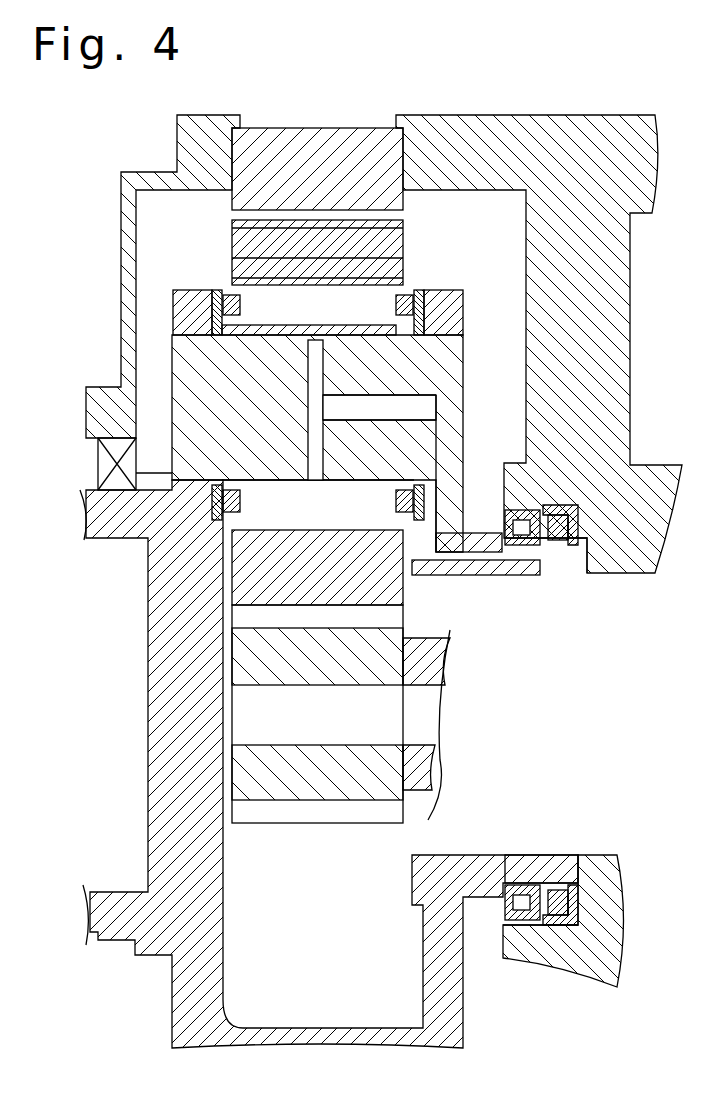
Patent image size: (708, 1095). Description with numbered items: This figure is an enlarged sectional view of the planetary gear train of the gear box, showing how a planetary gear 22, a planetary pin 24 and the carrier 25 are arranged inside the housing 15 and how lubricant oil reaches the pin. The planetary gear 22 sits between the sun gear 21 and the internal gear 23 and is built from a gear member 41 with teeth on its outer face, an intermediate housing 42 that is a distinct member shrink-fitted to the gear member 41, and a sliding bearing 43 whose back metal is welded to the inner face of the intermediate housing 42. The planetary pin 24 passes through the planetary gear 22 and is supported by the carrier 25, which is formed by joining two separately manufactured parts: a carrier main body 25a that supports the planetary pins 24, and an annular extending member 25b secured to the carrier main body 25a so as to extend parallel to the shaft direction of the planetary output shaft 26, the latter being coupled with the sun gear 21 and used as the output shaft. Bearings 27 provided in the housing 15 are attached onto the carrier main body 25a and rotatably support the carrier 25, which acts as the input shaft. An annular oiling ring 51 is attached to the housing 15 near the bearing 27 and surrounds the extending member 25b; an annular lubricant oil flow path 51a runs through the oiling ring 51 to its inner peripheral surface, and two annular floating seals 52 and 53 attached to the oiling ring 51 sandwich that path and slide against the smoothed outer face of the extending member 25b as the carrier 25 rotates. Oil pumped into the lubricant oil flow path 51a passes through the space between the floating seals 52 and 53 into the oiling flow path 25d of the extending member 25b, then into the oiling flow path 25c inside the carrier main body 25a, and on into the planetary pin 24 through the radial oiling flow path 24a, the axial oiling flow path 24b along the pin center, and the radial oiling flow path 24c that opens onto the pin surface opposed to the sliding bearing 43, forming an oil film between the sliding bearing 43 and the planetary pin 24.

The housing 15 is at (505, 116).
The sun gear 21 is at (240, 658).
The planetary gear 22 is at (372, 250).
The internal gear 23 is at (295, 118).
The planetary pin 24 is at (297, 441).
The oiling flow path 24a is at (437, 432).
The oiling flow path 24b is at (430, 384).
The oiling flow path 24c is at (430, 360).
The carrier 25 is at (307, 743).
The carrier main body 25a is at (192, 295).
The extending member 25b is at (580, 560).
The oiling flow path 25c is at (490, 575).
The oiling flow path 25d is at (548, 552).
The planetary output shaft 26 is at (418, 640).
The bearing 27 is at (510, 505).
The gear member 41 is at (400, 232).
The intermediate housing 42 is at (390, 262).
The sliding bearing 43 is at (352, 281).
The oiling ring 51 is at (591, 669).
The lubricant oil flow path 51a is at (575, 535).
The floating seal 52 is at (560, 545).
The floating seal 53 is at (530, 545).